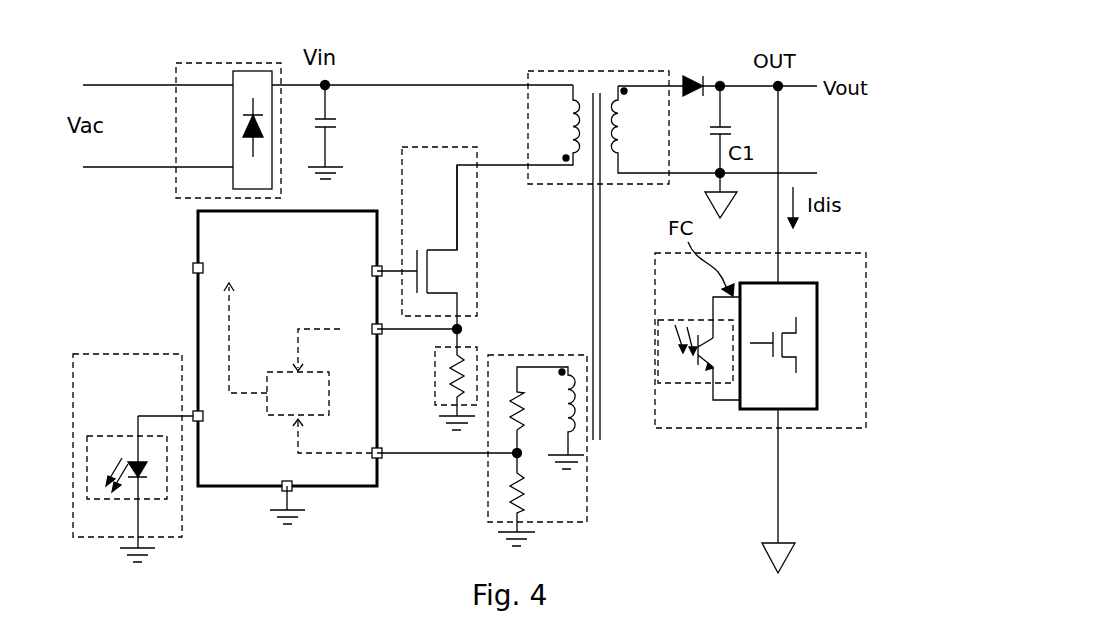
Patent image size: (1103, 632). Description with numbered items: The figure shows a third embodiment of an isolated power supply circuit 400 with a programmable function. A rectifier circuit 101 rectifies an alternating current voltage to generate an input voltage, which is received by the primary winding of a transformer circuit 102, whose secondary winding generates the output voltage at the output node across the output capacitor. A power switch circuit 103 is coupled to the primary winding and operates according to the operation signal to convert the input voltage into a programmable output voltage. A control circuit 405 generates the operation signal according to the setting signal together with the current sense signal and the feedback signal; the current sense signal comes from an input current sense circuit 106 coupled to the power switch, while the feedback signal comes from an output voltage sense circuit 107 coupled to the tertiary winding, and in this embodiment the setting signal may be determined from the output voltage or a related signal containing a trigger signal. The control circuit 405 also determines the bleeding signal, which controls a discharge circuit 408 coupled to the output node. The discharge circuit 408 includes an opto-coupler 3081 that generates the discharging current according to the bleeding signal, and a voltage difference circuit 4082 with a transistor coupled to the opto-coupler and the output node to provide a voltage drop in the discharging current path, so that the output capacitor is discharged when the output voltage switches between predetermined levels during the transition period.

The isolated power supply circuit 400 is at (884, 46).
The rectifier circuit 101 is at (214, 191).
The transformer circuit 102 is at (610, 70).
The power switch circuit 103 is at (439, 180).
The input current sense circuit 106 is at (435, 370).
The output voltage sense circuit 107 is at (488, 475).
The control circuit 405 is at (244, 476).
The discharge circuit 408 is at (697, 421).
The opto-coupler 3081 is at (705, 318).
The voltage difference circuit 4082 is at (817, 357).